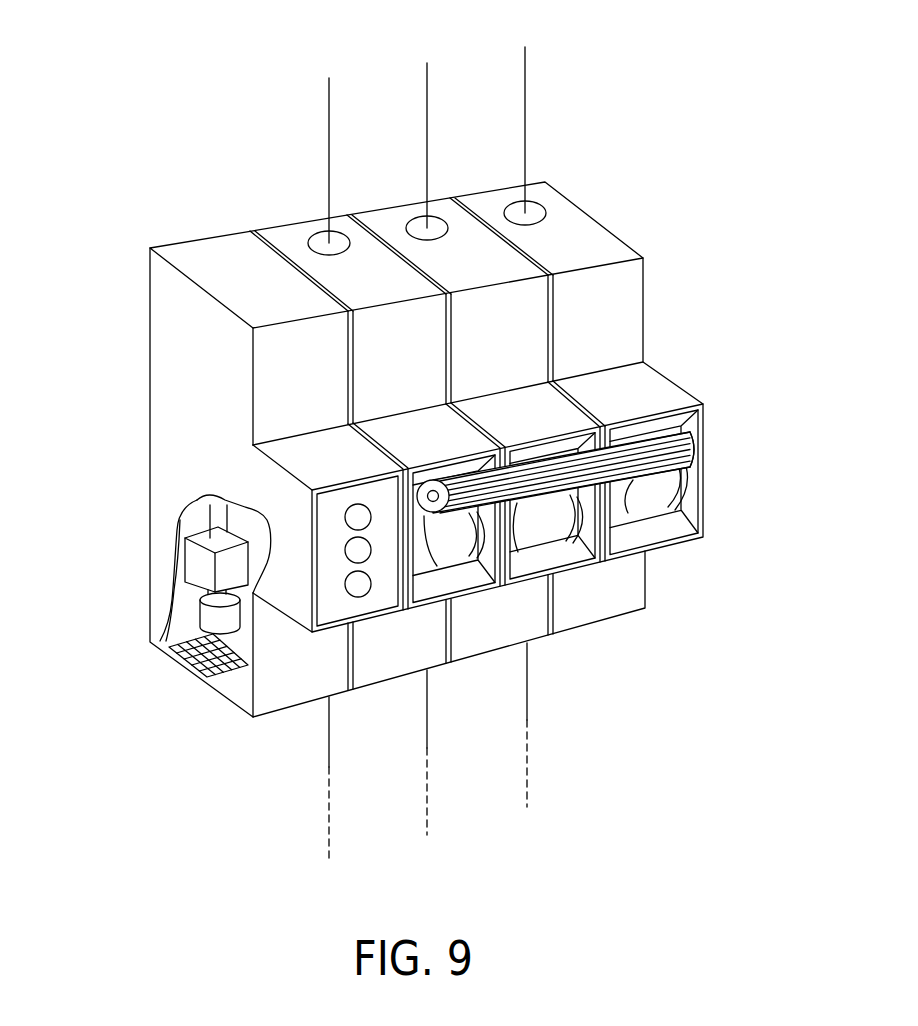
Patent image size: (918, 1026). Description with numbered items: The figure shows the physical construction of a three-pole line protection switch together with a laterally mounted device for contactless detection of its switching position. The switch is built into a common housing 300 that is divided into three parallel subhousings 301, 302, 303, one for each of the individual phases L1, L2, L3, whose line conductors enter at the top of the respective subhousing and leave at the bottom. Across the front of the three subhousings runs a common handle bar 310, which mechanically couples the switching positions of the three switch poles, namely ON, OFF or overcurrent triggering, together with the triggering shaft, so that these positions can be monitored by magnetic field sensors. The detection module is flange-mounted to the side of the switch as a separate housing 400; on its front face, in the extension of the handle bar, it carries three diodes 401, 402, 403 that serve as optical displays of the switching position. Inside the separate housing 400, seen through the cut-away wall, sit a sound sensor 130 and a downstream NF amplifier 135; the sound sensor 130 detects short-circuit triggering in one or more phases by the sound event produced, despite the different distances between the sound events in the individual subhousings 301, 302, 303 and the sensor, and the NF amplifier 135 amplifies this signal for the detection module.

The common housing 300 is at (663, 212).
The subhousing 301 is at (297, 253).
The subhousing 302 is at (387, 240).
The subhousing 303 is at (490, 217).
The common handle bar 310 is at (693, 452).
The separate housing 400 is at (247, 273).
The diode 401 is at (345, 517).
The diode 402 is at (345, 550).
The diode 403 is at (345, 585).
The NF amplifier 135 is at (207, 567).
The sound sensor 130 is at (198, 626).
The phase L1 is at (326, 447).
The phase L2 is at (425, 427).
The phase L3 is at (525, 405).